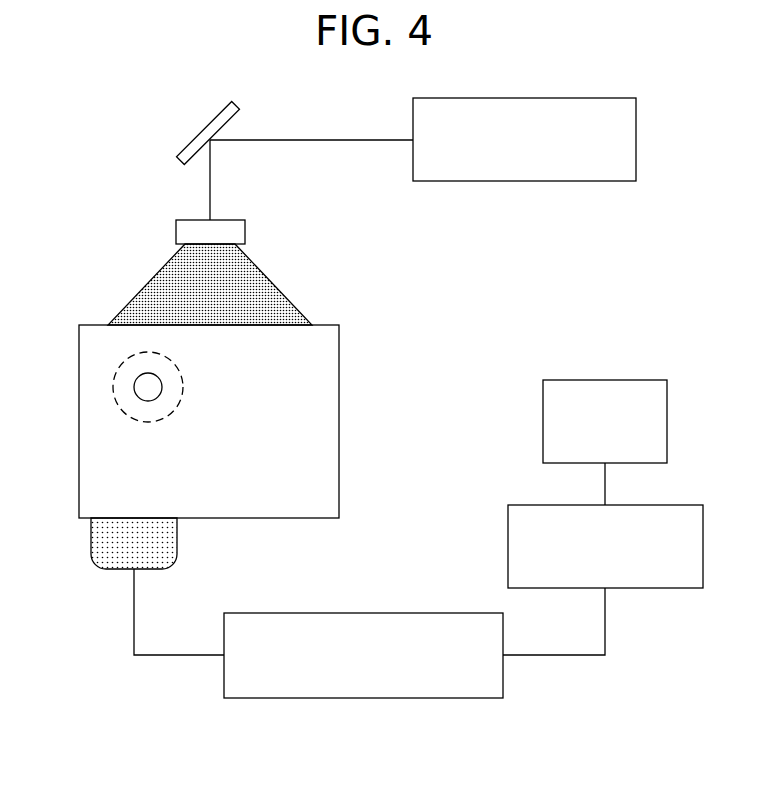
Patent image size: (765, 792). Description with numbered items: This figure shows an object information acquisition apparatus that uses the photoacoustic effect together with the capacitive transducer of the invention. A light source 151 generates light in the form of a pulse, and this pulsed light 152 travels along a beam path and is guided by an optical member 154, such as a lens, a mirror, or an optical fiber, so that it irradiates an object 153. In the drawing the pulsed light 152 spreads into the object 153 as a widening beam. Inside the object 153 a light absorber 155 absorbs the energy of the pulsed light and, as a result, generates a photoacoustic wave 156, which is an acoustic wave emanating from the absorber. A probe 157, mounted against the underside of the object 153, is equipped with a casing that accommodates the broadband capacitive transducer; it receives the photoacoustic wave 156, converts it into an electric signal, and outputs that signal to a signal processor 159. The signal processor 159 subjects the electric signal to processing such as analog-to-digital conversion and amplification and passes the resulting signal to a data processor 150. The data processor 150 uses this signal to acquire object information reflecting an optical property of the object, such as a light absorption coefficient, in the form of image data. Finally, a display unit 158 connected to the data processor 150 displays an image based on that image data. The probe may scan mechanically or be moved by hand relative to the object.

The data processor 150 is at (605, 546).
The light source 151 is at (524, 139).
The pulsed light 152 is at (330, 140).
The object 153 is at (340, 410).
The optical member 154 is at (198, 133).
The light absorber 155 is at (162, 389).
The photoacoustic wave 156 is at (118, 400).
The probe 157 is at (177, 548).
The display unit 158 is at (605, 421).
The signal processor 159 is at (363, 655).